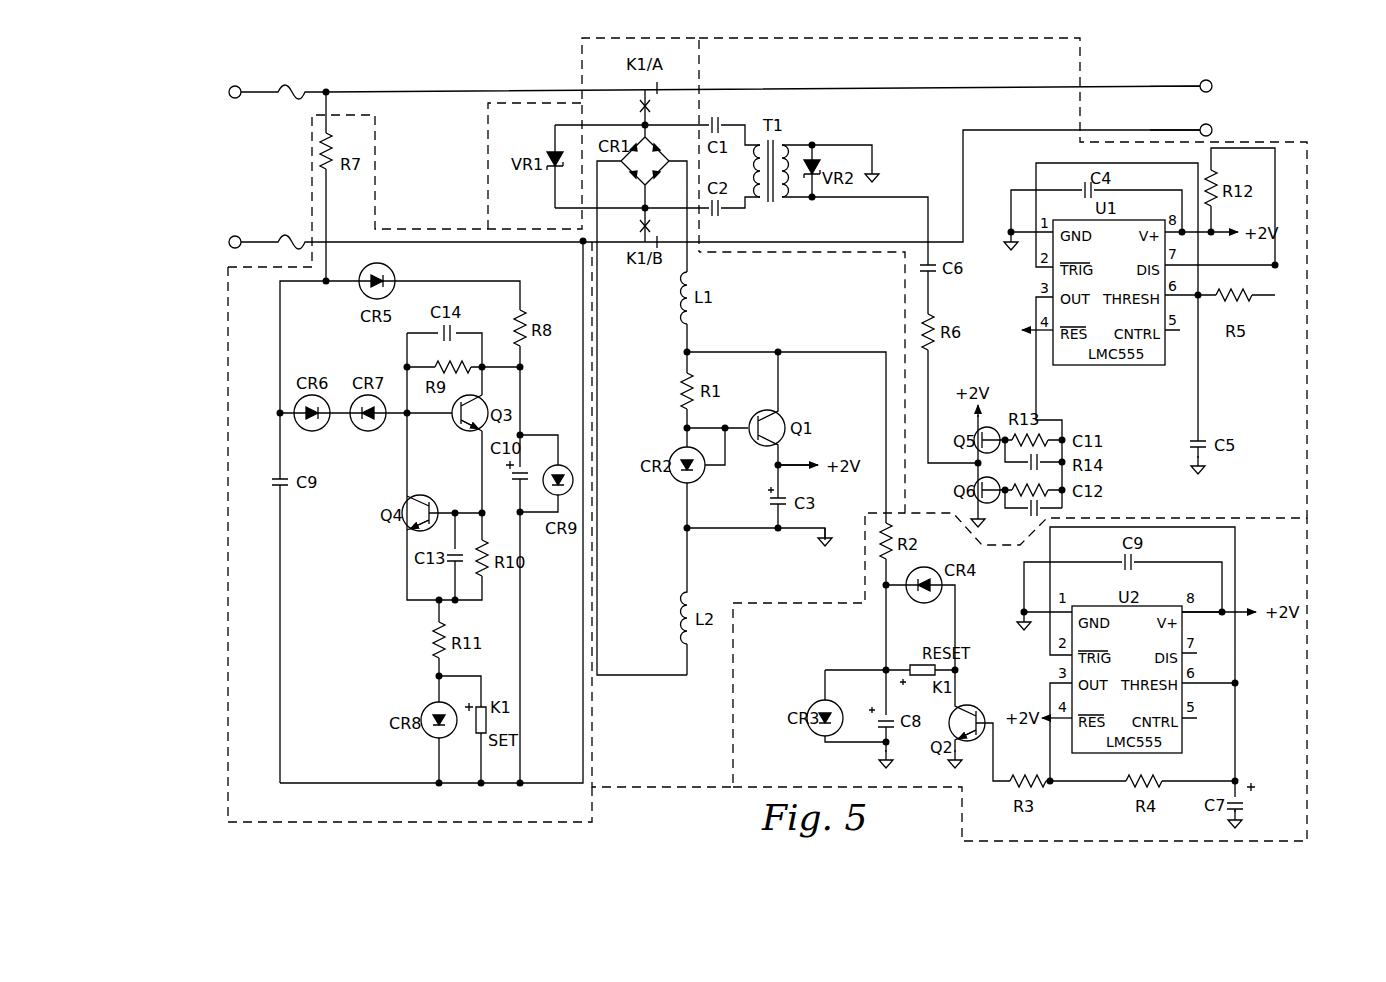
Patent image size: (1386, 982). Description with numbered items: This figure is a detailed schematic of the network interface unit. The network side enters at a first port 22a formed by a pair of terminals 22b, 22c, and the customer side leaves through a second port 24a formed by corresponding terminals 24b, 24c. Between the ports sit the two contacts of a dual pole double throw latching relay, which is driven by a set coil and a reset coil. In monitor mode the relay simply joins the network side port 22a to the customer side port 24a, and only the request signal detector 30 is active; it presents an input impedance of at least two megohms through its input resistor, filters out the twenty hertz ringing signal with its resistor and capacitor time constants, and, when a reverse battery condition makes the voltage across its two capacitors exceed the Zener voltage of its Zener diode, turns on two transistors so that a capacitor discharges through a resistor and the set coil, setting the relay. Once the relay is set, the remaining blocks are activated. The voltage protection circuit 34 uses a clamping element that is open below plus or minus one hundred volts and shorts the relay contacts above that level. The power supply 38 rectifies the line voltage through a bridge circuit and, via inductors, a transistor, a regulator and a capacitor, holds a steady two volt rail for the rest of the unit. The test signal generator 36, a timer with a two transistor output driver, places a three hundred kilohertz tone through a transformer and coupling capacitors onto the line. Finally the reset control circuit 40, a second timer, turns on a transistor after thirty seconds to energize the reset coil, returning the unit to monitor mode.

The first port 22a is at (226, 102).
The terminal 22b is at (237, 85).
The terminal 22c is at (228, 246).
The second port 24a is at (1215, 127).
The terminal 24b is at (1208, 80).
The terminal 24c is at (1215, 130).
The request signal detector 30 is at (228, 358).
The voltage protection circuit 34 is at (582, 72).
The test signal generator 36 is at (1082, 42).
The power supply 38 is at (593, 808).
The reset control circuit 40 is at (1307, 716).